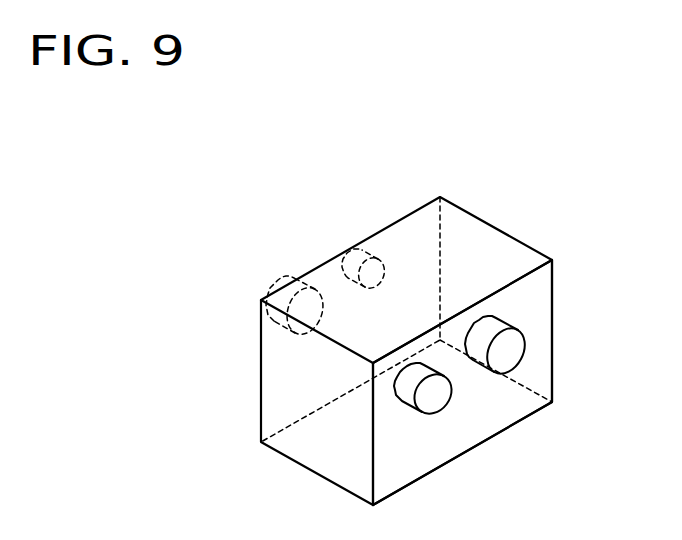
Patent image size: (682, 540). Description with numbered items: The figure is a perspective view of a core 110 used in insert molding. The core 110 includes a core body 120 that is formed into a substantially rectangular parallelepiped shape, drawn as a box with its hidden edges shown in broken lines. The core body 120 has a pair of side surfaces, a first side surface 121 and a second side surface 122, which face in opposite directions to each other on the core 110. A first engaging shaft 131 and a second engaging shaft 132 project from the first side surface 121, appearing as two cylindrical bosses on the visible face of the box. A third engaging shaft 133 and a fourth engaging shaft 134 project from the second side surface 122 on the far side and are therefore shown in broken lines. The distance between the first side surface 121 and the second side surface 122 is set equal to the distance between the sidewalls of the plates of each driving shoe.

The core 110 is at (212, 202).
The core body 120 is at (531, 244).
The first side surface 121 is at (535, 373).
The second side surface 122 is at (417, 225).
The first engaging shaft 131 is at (507, 357).
The second engaging shaft 132 is at (433, 397).
The third engaging shaft 133 is at (346, 253).
The fourth engaging shaft 134 is at (280, 289).